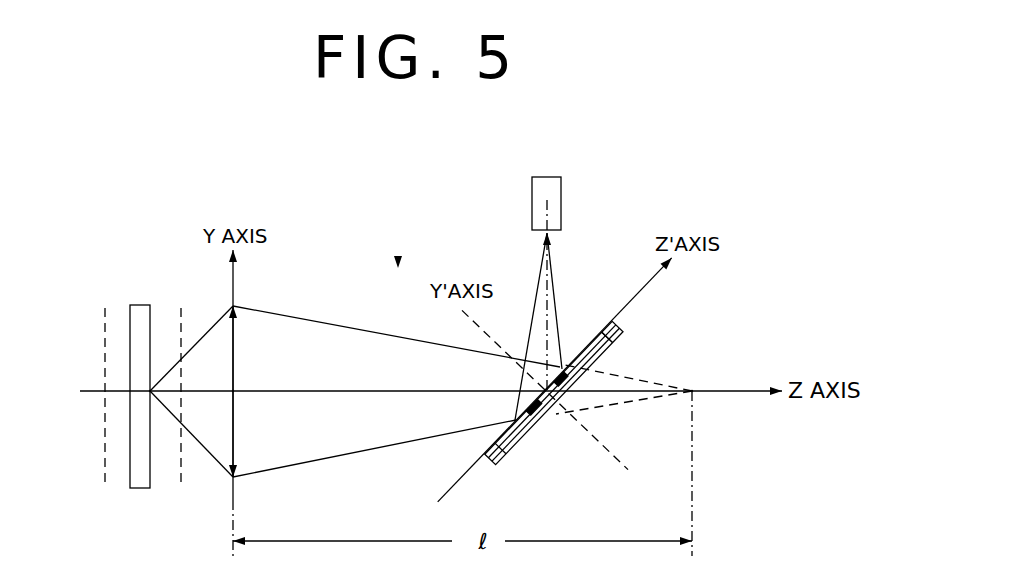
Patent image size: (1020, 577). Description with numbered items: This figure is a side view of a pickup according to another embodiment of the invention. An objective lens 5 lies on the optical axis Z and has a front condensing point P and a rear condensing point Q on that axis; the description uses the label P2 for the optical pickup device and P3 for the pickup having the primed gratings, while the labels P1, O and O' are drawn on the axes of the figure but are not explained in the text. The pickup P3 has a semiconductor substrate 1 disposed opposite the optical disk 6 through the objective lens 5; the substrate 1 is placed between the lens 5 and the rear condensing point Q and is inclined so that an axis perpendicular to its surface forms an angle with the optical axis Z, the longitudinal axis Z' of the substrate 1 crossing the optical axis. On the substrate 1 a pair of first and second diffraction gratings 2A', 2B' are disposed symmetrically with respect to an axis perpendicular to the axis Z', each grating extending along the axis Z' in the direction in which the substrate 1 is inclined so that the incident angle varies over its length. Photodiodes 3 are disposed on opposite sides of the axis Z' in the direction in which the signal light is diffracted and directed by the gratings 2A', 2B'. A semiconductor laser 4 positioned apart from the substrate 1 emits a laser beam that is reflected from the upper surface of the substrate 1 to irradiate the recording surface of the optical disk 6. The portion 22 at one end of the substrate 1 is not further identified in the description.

The semiconductor substrate 1 is at (563, 380).
The photodiode 3 is at (594, 330).
The semiconductor laser 4 is at (561, 190).
The objective lens 5 is at (235, 340).
The optical disk 6 is at (138, 305).
The end portion of crystal 22 is at (508, 462).
The first diffraction grating 2A' is at (578, 332).
The second diffraction grating 2B' is at (491, 385).
The front condensing point P is at (151, 395).
The plane P1 is at (104, 393).
The optical pickup device P2 is at (182, 393).
The pickup P3 is at (398, 266).
The origin O of lens O is at (257, 414).
The origin O' of crystal O' is at (559, 426).
The rear condensing point Q is at (694, 393).